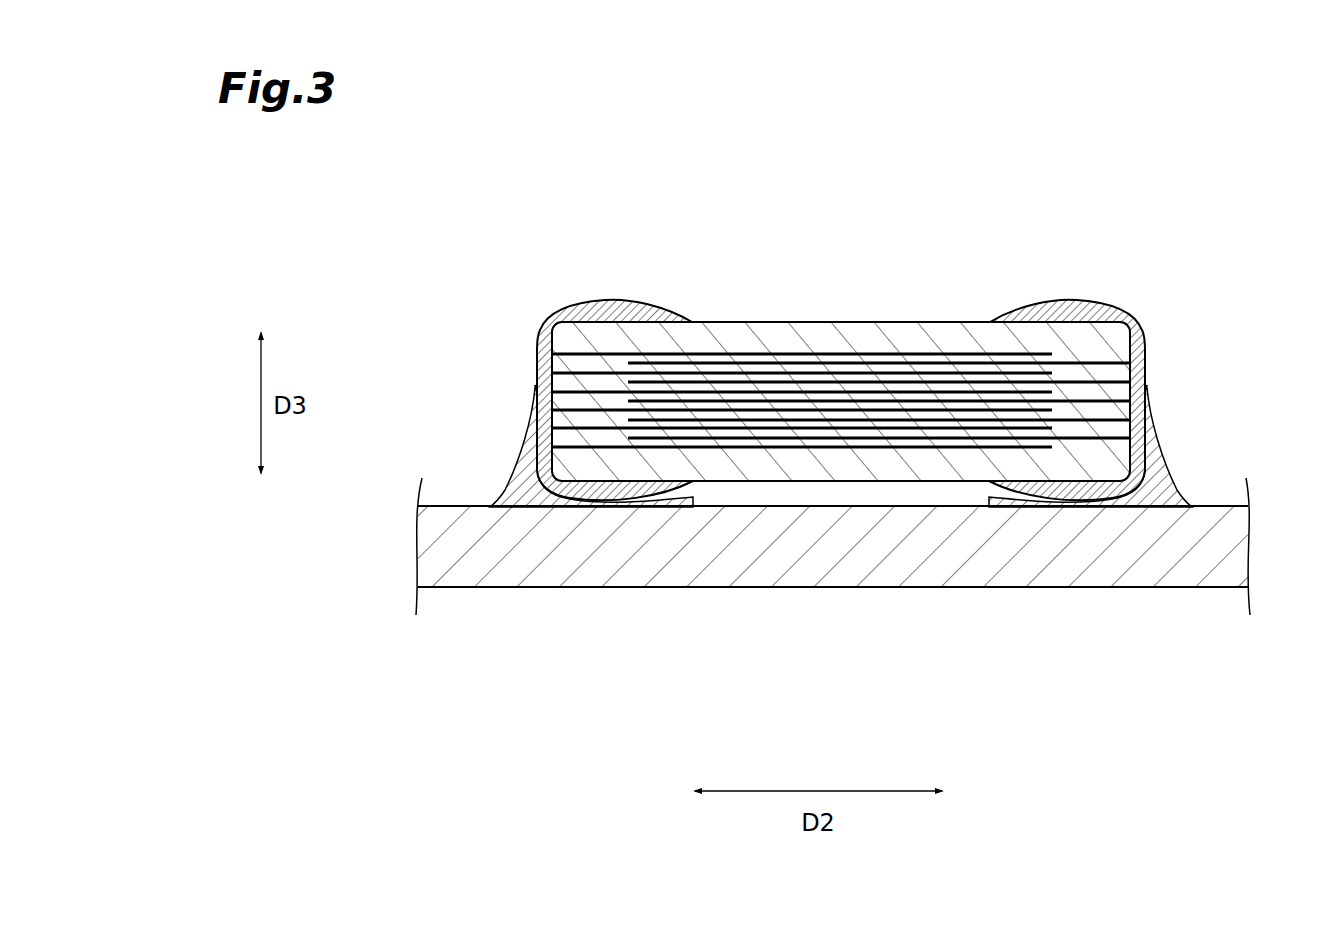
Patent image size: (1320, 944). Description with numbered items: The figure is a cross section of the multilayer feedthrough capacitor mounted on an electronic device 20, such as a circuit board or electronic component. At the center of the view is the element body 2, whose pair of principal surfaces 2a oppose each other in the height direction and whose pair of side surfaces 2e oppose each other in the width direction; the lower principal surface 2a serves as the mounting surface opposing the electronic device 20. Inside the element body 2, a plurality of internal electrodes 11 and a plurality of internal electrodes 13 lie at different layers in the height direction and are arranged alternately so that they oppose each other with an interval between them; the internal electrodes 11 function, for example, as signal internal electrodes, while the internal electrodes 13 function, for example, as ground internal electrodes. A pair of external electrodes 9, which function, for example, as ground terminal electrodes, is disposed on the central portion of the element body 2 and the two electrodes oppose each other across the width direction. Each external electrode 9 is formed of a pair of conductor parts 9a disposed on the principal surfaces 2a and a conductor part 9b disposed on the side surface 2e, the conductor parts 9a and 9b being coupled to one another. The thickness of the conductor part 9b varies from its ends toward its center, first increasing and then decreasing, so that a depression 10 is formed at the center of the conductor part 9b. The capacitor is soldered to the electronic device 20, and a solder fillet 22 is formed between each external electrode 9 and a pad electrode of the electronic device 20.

The element body 2 is at (880, 318).
The principal surface 2a is at (762, 322).
The side surface 2e is at (535, 342).
The external electrode 9 is at (837, 418).
The conductor part 9a is at (599, 302).
The conductor part 9b is at (513, 466).
The depression 10 is at (533, 403).
The internal electrode 11 is at (1020, 420).
The internal electrode 13 is at (600, 392).
The electronic device 20 is at (768, 560).
The solder fillet 22 is at (535, 507).